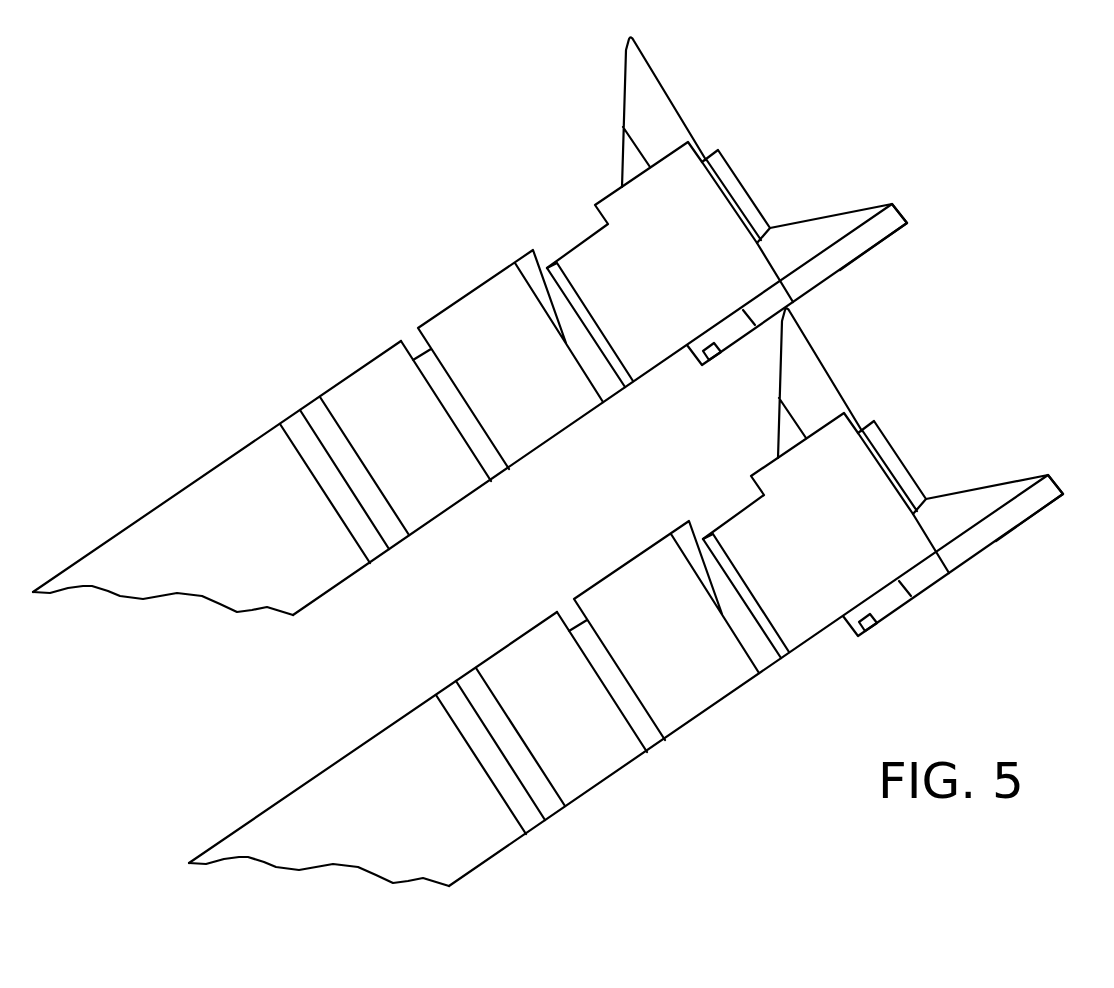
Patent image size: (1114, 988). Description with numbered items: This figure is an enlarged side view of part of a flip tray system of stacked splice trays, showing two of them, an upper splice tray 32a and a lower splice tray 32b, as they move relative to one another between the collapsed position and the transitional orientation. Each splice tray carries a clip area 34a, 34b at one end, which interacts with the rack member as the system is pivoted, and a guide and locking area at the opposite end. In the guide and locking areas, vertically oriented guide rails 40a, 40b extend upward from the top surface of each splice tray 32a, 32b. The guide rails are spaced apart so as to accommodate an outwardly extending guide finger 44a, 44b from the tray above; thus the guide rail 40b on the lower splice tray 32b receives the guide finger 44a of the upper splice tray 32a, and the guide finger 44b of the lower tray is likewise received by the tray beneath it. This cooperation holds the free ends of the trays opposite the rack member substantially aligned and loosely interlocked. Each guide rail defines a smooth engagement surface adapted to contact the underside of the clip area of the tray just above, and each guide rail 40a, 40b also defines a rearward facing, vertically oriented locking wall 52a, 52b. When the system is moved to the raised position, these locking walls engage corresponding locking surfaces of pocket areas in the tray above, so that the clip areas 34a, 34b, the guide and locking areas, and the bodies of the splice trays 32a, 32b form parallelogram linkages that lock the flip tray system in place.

The clip area 34a is at (487, 326).
The clip area 34b is at (640, 588).
The splice tray 32a is at (375, 388).
The splice tray 32b is at (533, 666).
The guide rail 40a is at (650, 93).
The guide rail 40b is at (822, 388).
The guide finger 44a is at (825, 232).
The guide finger 44b is at (982, 497).
The locking wall 52a is at (692, 120).
The locking wall 52b is at (812, 332).